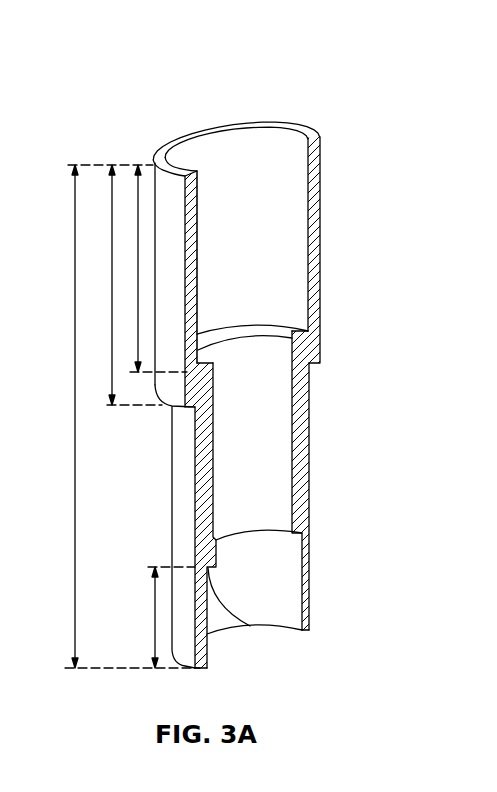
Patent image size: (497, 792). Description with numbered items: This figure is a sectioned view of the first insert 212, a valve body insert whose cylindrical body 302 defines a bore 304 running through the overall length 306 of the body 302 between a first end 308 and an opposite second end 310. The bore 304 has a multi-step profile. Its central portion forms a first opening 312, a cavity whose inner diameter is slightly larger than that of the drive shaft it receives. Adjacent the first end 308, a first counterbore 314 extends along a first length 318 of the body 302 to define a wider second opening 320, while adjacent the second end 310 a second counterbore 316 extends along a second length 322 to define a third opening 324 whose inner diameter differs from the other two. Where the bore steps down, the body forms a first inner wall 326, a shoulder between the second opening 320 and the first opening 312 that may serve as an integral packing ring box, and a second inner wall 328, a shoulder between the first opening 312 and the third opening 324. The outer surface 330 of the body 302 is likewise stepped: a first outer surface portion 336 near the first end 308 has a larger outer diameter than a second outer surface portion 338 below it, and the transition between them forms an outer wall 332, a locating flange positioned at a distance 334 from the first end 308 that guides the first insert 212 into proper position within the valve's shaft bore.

The first insert 212 is at (121, 42).
The body 302 is at (313, 293).
The bore 304 is at (210, 150).
The overall length 306 is at (75, 443).
The first end 308 is at (263, 125).
The second end 310 is at (287, 632).
The first opening 312 is at (273, 503).
The first counterbore 314 is at (300, 200).
The second counterbore 316 is at (277, 567).
The first length 318 is at (138, 272).
The second opening 320 is at (236, 149).
The second length 322 is at (155, 610).
The third opening 324 is at (229, 597).
The first inner wall 326 is at (289, 333).
The second inner wall 328 is at (250, 629).
The outer surface 330 is at (178, 515).
The outer wall 332 is at (192, 410).
The distance 334 is at (112, 201).
The first outer surface portion 336 is at (313, 245).
The second outer surface portion 338 is at (300, 456).